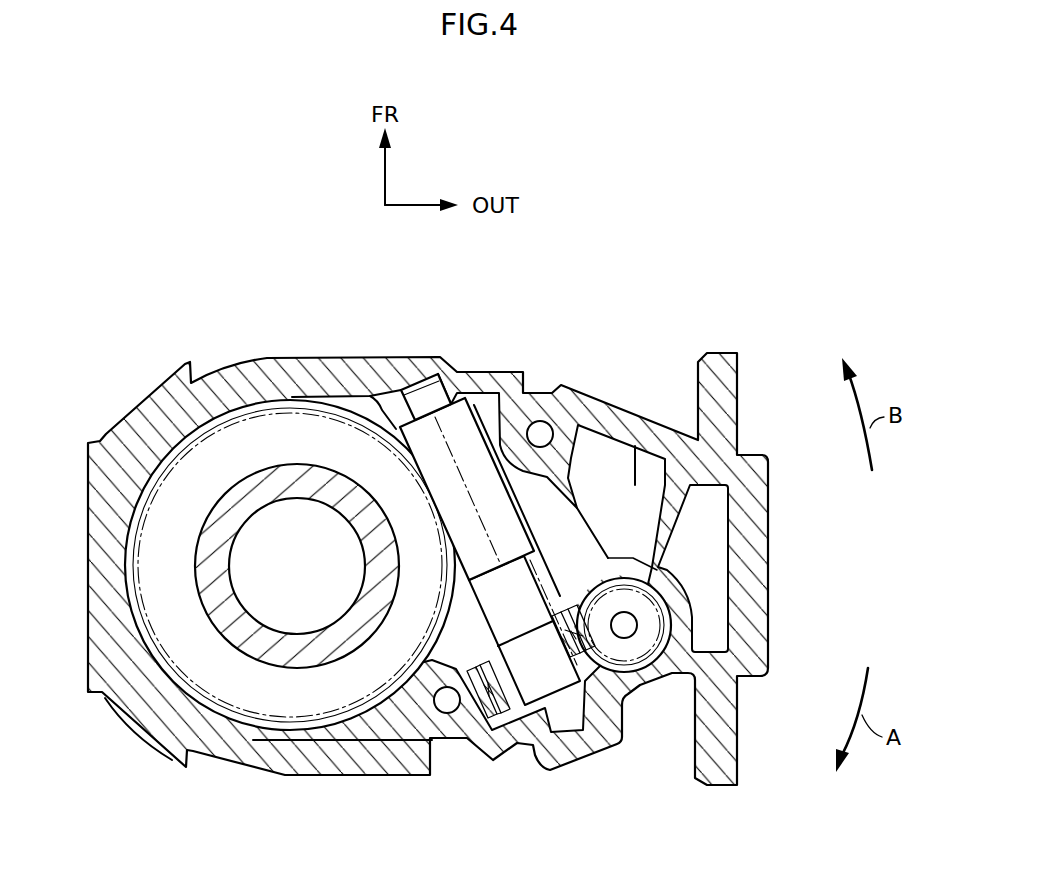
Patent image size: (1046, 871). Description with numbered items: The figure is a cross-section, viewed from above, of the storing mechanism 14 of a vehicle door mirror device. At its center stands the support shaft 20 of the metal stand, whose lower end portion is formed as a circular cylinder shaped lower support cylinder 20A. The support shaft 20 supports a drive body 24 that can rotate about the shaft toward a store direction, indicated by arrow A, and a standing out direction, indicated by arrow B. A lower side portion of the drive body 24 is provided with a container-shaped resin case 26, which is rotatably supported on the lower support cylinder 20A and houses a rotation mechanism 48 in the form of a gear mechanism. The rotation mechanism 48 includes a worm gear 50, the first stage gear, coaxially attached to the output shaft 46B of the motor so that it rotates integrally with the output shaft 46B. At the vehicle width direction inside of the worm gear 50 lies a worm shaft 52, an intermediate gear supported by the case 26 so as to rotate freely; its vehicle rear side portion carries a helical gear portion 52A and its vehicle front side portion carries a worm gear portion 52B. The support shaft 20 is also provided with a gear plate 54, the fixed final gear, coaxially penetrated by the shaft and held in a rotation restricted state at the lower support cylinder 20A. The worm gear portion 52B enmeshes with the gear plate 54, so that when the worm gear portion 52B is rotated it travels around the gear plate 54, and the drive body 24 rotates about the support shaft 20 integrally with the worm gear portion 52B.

The storing mechanism 14 is at (213, 279).
The case 26 is at (343, 352).
The drive body 24 is at (624, 403).
The gear plate 54 is at (283, 731).
The support shaft 20 is at (261, 470).
The lower support cylinder 20A is at (290, 668).
The worm shaft 52 is at (537, 563).
The worm gear portion 52B is at (520, 512).
The helical gear portion 52A is at (500, 714).
The rotation mechanism 48 is at (521, 712).
The worm gear 50 is at (663, 598).
The output shaft 46B is at (637, 625).